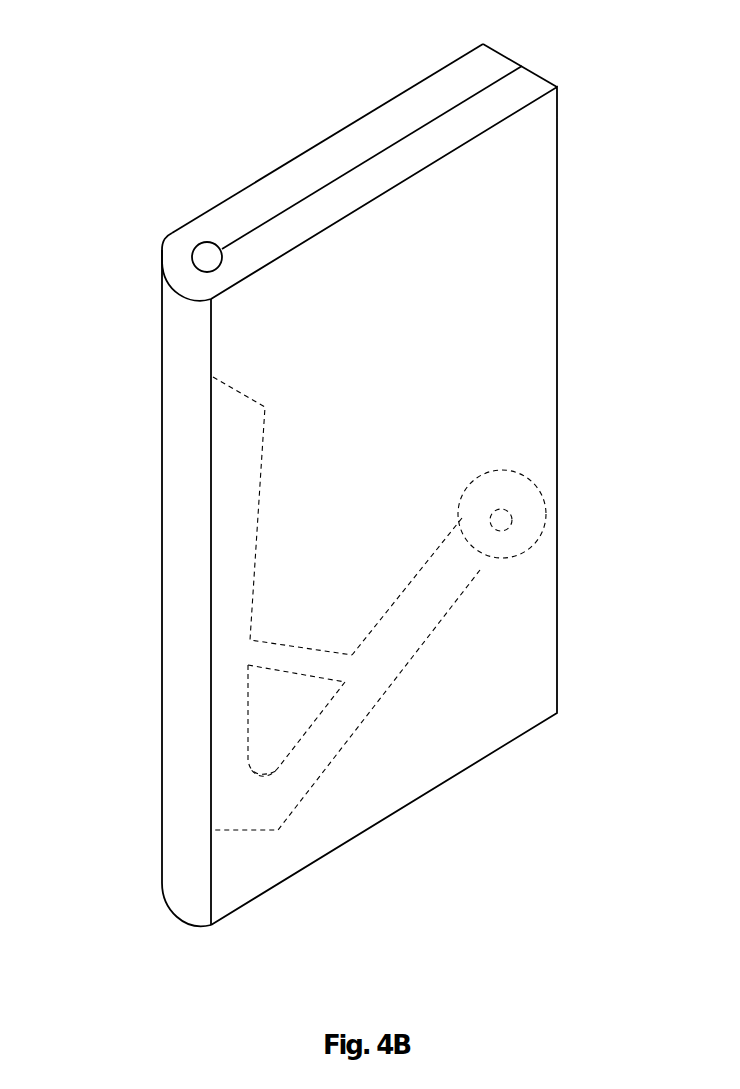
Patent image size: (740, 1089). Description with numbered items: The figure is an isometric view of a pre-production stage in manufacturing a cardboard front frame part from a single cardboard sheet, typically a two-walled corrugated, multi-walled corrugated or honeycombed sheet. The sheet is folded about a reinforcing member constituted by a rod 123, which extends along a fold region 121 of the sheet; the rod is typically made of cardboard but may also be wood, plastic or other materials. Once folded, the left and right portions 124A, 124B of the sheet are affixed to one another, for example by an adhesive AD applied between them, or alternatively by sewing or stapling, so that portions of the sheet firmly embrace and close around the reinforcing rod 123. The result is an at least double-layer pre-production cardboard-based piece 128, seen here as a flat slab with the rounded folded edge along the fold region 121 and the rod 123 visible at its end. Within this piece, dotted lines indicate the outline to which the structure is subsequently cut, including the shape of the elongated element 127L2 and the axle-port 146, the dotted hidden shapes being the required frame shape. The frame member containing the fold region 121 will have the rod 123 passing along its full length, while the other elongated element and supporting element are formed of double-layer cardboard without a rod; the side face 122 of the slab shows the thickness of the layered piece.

The fold region 121 is at (177, 290).
The second housing portion 122 is at (178, 567).
The reinforcing rod 123 is at (205, 261).
The left portion of cardboard sheet 124A is at (538, 88).
The right portion of cardboard sheet 124B is at (490, 58).
The double-layer pre-production cardboard-based piece 128 is at (537, 353).
The second link 127L2 is at (545, 483).
The axle-port 146 is at (585, 573).
The adhesive AD is at (322, 186).